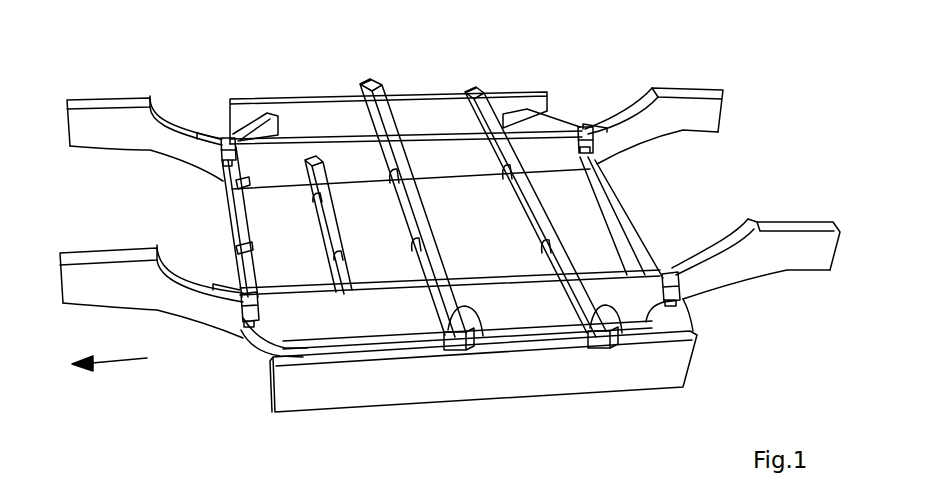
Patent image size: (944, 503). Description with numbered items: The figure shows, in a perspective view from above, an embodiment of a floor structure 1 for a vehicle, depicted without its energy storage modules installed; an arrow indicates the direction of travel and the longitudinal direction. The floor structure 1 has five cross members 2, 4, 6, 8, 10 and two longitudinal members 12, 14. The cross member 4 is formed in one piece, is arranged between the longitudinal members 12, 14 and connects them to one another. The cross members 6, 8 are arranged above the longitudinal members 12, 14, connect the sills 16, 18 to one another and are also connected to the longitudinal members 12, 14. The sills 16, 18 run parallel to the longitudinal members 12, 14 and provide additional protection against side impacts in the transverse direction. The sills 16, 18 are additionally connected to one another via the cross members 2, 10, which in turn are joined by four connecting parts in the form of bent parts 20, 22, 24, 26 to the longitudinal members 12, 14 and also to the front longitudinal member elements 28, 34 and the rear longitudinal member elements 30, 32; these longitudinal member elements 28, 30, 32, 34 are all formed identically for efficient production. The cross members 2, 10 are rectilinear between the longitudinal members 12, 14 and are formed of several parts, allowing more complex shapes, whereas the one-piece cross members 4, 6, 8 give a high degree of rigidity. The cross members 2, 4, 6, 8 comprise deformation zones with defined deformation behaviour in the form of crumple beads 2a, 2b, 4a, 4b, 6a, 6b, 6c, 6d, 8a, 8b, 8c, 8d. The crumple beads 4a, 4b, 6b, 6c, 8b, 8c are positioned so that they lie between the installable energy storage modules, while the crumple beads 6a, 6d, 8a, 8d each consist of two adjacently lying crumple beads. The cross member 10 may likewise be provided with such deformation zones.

The floor structure 1 is at (800, 104).
The cross member 2 is at (222, 186).
The crumple bead 2a is at (236, 245).
The crumple bead 2b is at (224, 203).
The cross member 4 is at (315, 158).
The crumple bead 4a is at (332, 253).
The crumple bead 4b is at (313, 198).
The cross member 6 is at (388, 133).
The crumple bead 6a is at (473, 335).
The crumple bead 6b is at (410, 233).
The crumple bead 6c is at (392, 168).
The crumple bead 6d is at (377, 82).
The cross member 8 is at (490, 125).
The crumple bead 8a is at (613, 333).
The crumple bead 8b is at (540, 241).
The crumple bead 8c is at (501, 165).
The crumple bead 8d is at (478, 88).
The cross member 10 is at (637, 237).
The longitudinal member 12 is at (370, 318).
The longitudinal member 14 is at (297, 138).
The sill 16 is at (337, 390).
The sill 18 is at (247, 100).
The bent part 20 is at (245, 305).
The bent part 22 is at (685, 292).
The bent part 24 is at (580, 130).
The bent part 26 is at (222, 133).
The front longitudinal member element 28 is at (90, 255).
The rear longitudinal member element 30 is at (813, 225).
The rear longitudinal member element 32 is at (702, 95).
The front longitudinal member element 34 is at (98, 107).